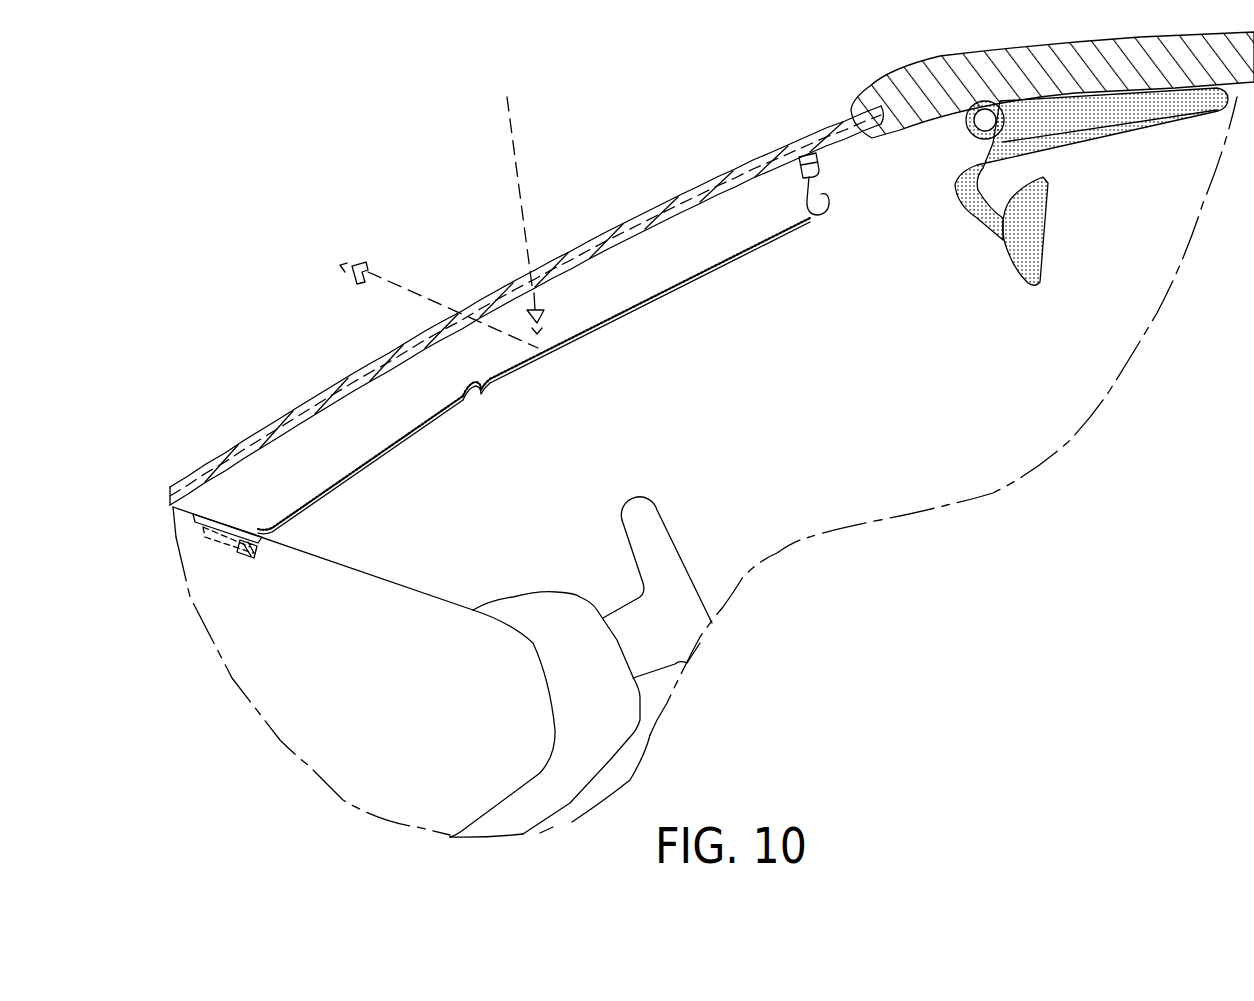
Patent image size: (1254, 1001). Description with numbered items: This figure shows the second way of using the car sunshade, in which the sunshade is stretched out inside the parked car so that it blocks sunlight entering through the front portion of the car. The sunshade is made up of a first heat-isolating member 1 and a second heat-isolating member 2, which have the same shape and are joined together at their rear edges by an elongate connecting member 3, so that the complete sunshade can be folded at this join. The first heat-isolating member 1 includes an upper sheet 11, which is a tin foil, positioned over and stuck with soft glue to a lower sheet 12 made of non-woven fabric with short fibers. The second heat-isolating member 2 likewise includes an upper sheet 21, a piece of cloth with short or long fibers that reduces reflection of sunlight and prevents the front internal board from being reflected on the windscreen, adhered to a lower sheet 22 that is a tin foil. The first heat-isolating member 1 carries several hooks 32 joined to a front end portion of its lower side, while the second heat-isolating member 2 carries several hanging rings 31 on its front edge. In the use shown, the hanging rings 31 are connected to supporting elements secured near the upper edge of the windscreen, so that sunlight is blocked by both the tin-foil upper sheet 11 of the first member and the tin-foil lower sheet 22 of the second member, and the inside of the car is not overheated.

The first heat-isolating member 1 is at (206, 530).
The upper sheet 11 is at (357, 467).
The lower sheet 12 is at (367, 470).
The second heat-isolating member 2 is at (650, 253).
The upper sheet 21 is at (665, 300).
The lower sheet 22 is at (678, 292).
The elongate connecting member 3 is at (485, 403).
The hanging ring 31 is at (805, 216).
The hook 32 is at (247, 547).